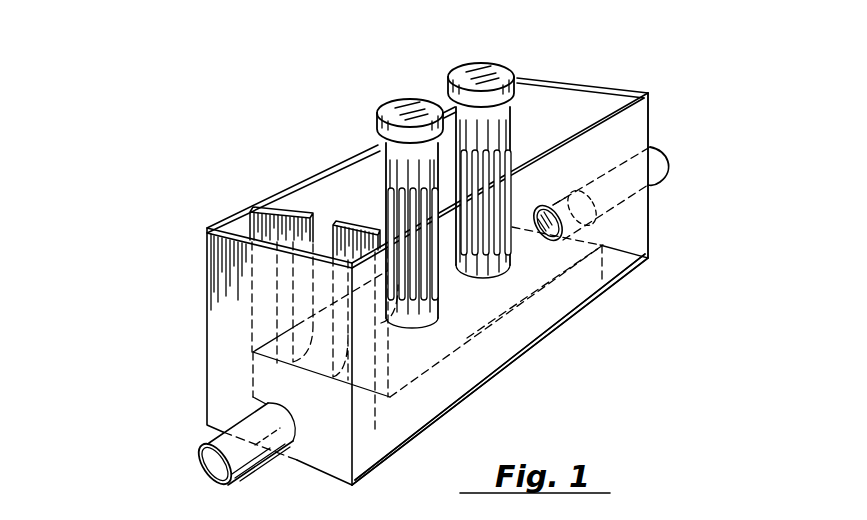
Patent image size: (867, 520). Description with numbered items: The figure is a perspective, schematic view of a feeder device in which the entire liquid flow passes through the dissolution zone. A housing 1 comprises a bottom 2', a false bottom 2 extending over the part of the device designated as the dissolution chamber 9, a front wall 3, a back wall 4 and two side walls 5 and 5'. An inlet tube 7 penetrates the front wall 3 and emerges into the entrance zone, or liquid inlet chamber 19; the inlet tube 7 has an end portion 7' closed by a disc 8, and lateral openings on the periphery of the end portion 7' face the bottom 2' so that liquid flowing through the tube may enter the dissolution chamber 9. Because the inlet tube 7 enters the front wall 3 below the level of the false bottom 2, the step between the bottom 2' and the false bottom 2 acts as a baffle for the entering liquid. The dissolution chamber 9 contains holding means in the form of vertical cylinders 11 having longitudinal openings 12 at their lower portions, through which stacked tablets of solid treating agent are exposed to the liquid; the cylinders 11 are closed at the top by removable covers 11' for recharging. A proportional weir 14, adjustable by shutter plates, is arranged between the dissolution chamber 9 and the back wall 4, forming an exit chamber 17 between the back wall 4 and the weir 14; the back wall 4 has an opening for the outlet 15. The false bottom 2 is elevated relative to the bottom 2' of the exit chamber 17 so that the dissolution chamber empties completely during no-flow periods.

The housing 1 is at (662, 100).
The false bottom 2 is at (481, 315).
The bottom 2' is at (532, 369).
The front wall 3 is at (608, 95).
The back wall 4 is at (231, 303).
The side wall 5 is at (331, 161).
The side wall 5' is at (664, 175).
The inlet tube 7 is at (634, 193).
The end portion 7' is at (567, 197).
The disc 8 is at (548, 246).
The dissolution chamber 9 is at (462, 300).
The vertical cylinders 11 is at (453, 172).
The covers 11' is at (423, 96).
The longitudinal openings 12 is at (410, 213).
The proportional weir 14 is at (295, 206).
The outlet 15 is at (209, 441).
The exit chamber 17 is at (243, 225).
The liquid inlet chamber 19 is at (512, 122).